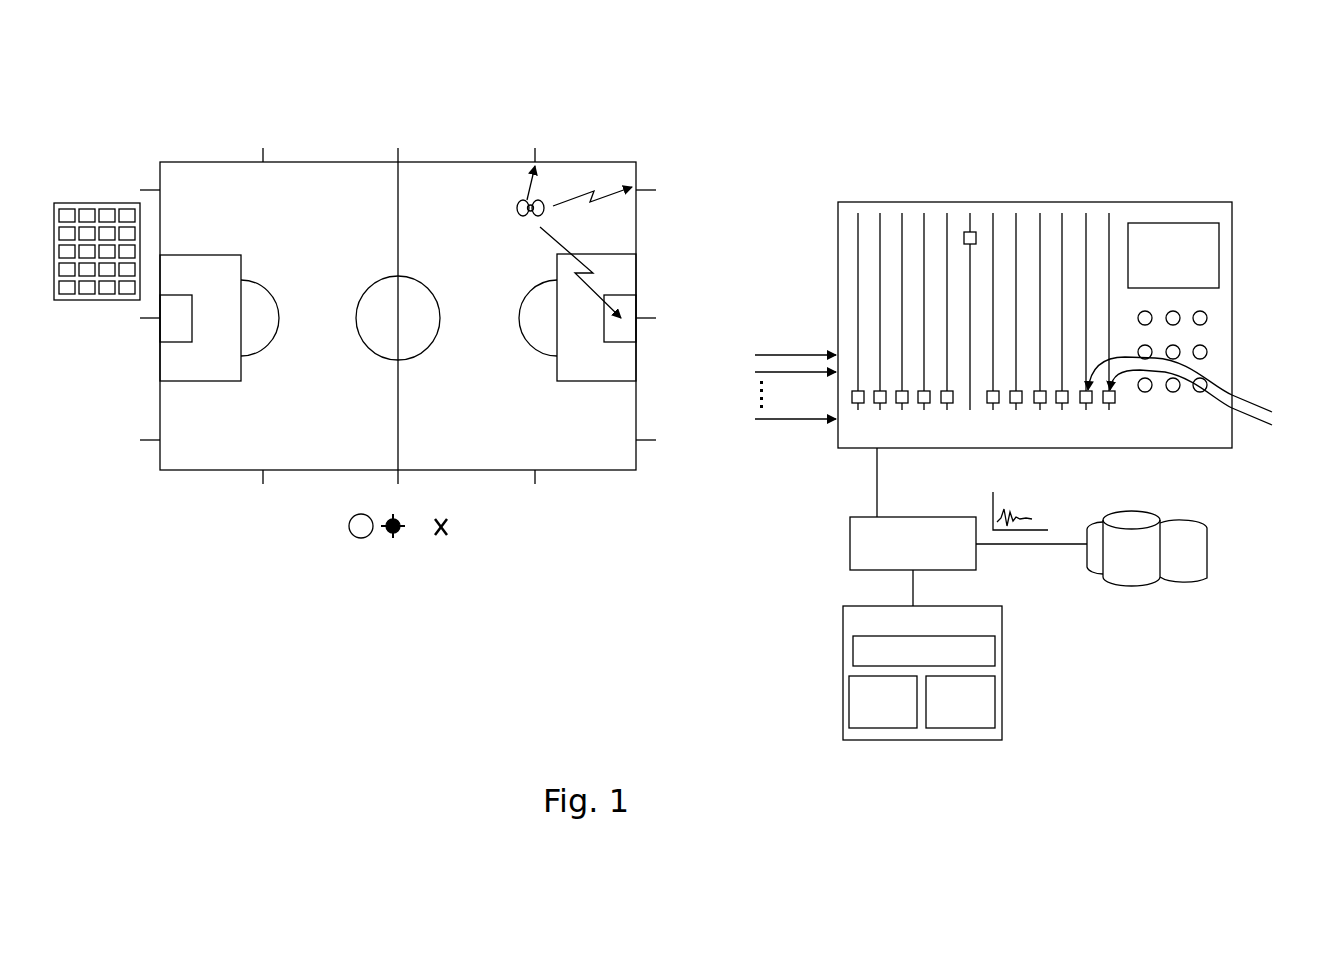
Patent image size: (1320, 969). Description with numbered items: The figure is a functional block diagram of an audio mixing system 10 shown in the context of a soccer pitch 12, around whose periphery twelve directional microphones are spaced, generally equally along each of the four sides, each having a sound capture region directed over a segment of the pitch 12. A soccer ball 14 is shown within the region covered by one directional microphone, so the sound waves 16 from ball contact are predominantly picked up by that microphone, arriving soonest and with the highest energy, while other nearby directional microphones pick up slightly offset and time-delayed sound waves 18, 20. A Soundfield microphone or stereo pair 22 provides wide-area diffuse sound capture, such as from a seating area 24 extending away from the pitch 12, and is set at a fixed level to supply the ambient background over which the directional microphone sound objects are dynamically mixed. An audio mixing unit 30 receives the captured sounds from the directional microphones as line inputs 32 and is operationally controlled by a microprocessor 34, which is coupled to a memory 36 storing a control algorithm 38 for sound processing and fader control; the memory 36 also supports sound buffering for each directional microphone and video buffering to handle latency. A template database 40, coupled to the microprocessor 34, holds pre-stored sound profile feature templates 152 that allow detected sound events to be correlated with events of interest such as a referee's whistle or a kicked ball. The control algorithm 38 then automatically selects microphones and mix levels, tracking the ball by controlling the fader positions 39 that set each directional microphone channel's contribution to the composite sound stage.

The audio mixing system 10 is at (663, 61).
The soccer pitch 12 is at (439, 178).
The soccer ball 14 is at (511, 220).
The sound waves 16 is at (505, 183).
The sound waves 18 is at (592, 207).
The sound waves 20 is at (582, 272).
The Soundfield microphone or stereo pair 22 is at (402, 540).
The seating area 24 is at (62, 198).
The audio mixing unit 30 is at (856, 196).
The line inputs 32 is at (768, 348).
The microprocessor 34 is at (968, 561).
The memory 36 is at (922, 673).
The control algorithm 38 is at (924, 651).
The fader positions 39 is at (972, 230).
The template database 40 is at (1215, 562).
The pre-stored feature templates 152 is at (1020, 511).